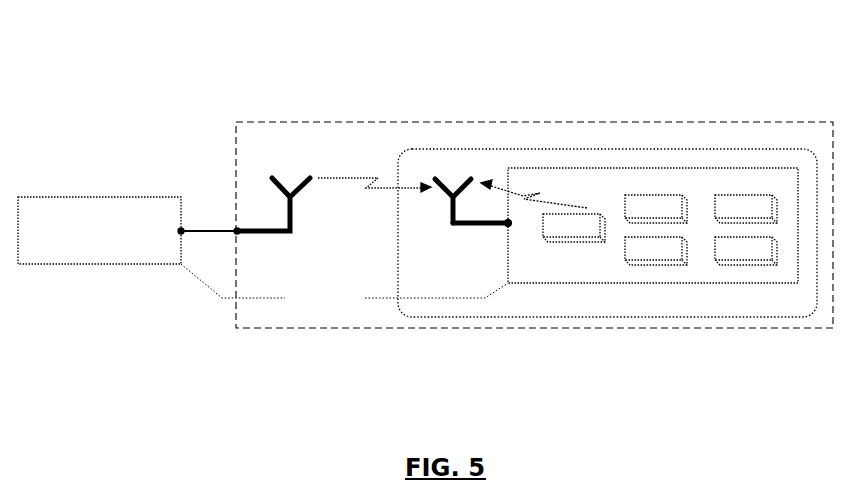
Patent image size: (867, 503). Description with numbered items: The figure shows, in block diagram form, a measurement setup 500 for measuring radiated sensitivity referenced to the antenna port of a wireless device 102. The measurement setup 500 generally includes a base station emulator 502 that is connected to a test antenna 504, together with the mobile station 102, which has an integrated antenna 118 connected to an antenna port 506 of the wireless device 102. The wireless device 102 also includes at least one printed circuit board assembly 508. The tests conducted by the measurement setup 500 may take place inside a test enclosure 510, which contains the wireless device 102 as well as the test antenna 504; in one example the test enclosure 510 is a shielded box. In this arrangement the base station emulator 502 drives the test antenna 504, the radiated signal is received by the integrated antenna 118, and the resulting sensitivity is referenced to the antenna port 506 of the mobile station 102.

The measurement setup 500 is at (660, 90).
The test enclosure 510 is at (688, 122).
The base station emulator 502 is at (50, 263).
The test antenna 504 is at (257, 230).
The integrated antenna 118 is at (435, 186).
The antenna port 506 is at (508, 226).
The printed circuit board (PCB) assembly 508 is at (632, 168).
The wireless device 102 is at (628, 313).